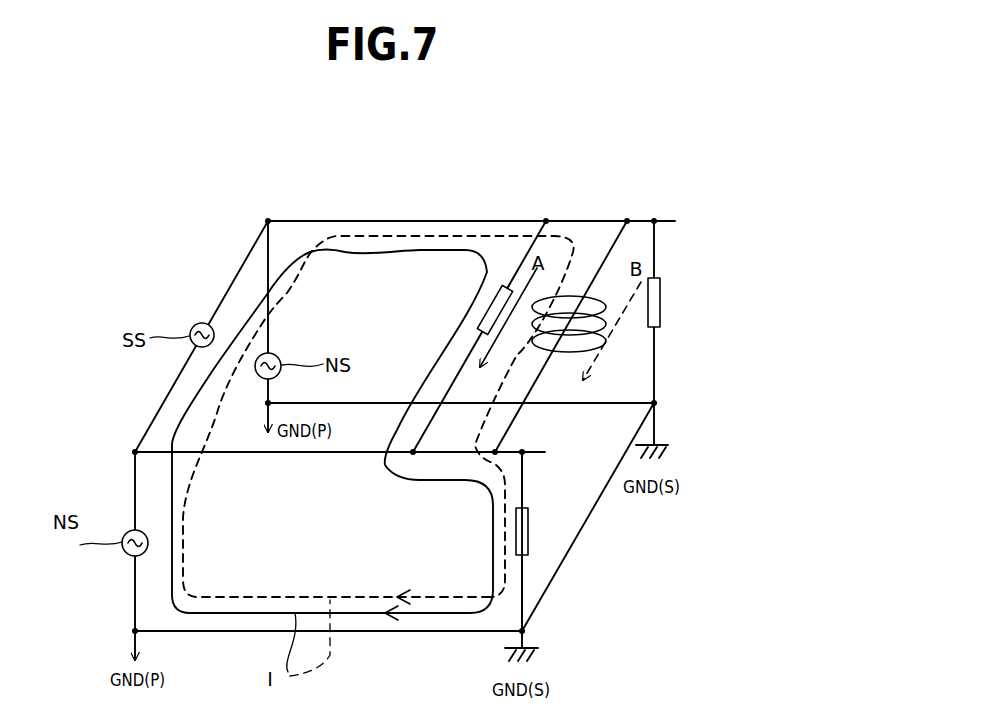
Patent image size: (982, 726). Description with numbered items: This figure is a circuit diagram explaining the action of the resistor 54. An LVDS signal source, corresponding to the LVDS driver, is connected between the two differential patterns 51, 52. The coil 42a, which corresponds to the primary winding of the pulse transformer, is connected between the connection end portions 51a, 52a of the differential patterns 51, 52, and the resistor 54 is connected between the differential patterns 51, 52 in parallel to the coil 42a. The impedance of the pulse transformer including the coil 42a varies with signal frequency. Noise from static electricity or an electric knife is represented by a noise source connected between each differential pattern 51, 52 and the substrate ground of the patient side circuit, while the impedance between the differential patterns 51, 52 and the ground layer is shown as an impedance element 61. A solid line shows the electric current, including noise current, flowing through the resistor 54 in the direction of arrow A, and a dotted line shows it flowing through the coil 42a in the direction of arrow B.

The differential pattern 51 is at (407, 221).
The connection end portion 51a is at (630, 221).
The resistor 54 is at (502, 282).
The coil 42a is at (578, 297).
The impedance element 61 is at (660, 302).
The differential pattern 52 is at (342, 453).
The connection end portion 52a is at (523, 449).